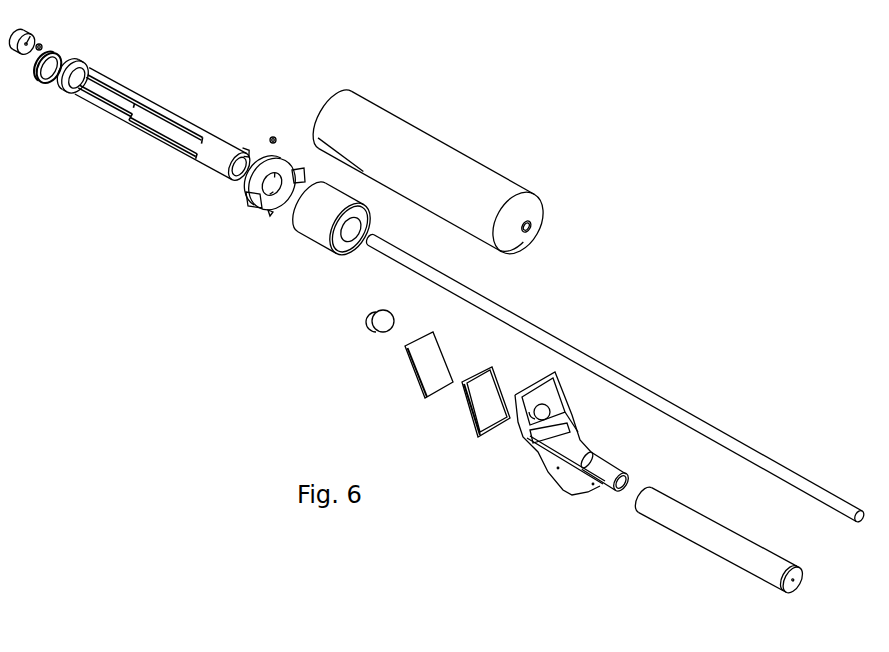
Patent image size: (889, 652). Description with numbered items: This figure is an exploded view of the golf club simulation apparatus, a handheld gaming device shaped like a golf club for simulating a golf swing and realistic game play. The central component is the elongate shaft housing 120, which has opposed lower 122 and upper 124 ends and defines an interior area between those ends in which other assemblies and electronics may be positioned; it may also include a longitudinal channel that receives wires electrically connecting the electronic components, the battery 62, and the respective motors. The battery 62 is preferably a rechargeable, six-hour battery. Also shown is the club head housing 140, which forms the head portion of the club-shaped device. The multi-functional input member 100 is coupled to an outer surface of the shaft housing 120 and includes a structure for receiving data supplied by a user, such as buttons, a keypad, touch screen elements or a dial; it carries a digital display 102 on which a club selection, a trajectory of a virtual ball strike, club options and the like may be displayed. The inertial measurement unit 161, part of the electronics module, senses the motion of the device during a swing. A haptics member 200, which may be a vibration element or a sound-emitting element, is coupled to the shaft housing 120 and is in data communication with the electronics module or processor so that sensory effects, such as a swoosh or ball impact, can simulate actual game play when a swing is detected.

The battery 62 is at (310, 227).
The multi-functional input member 100 is at (542, 483).
The digital display 102 is at (487, 414).
The shaft housing 120 is at (607, 341).
The lower end 122 is at (374, 248).
The upper end 124 is at (858, 507).
The club head housing 140 is at (440, 141).
The inertial measurement unit 161 is at (427, 382).
The haptics member 200 is at (372, 333).